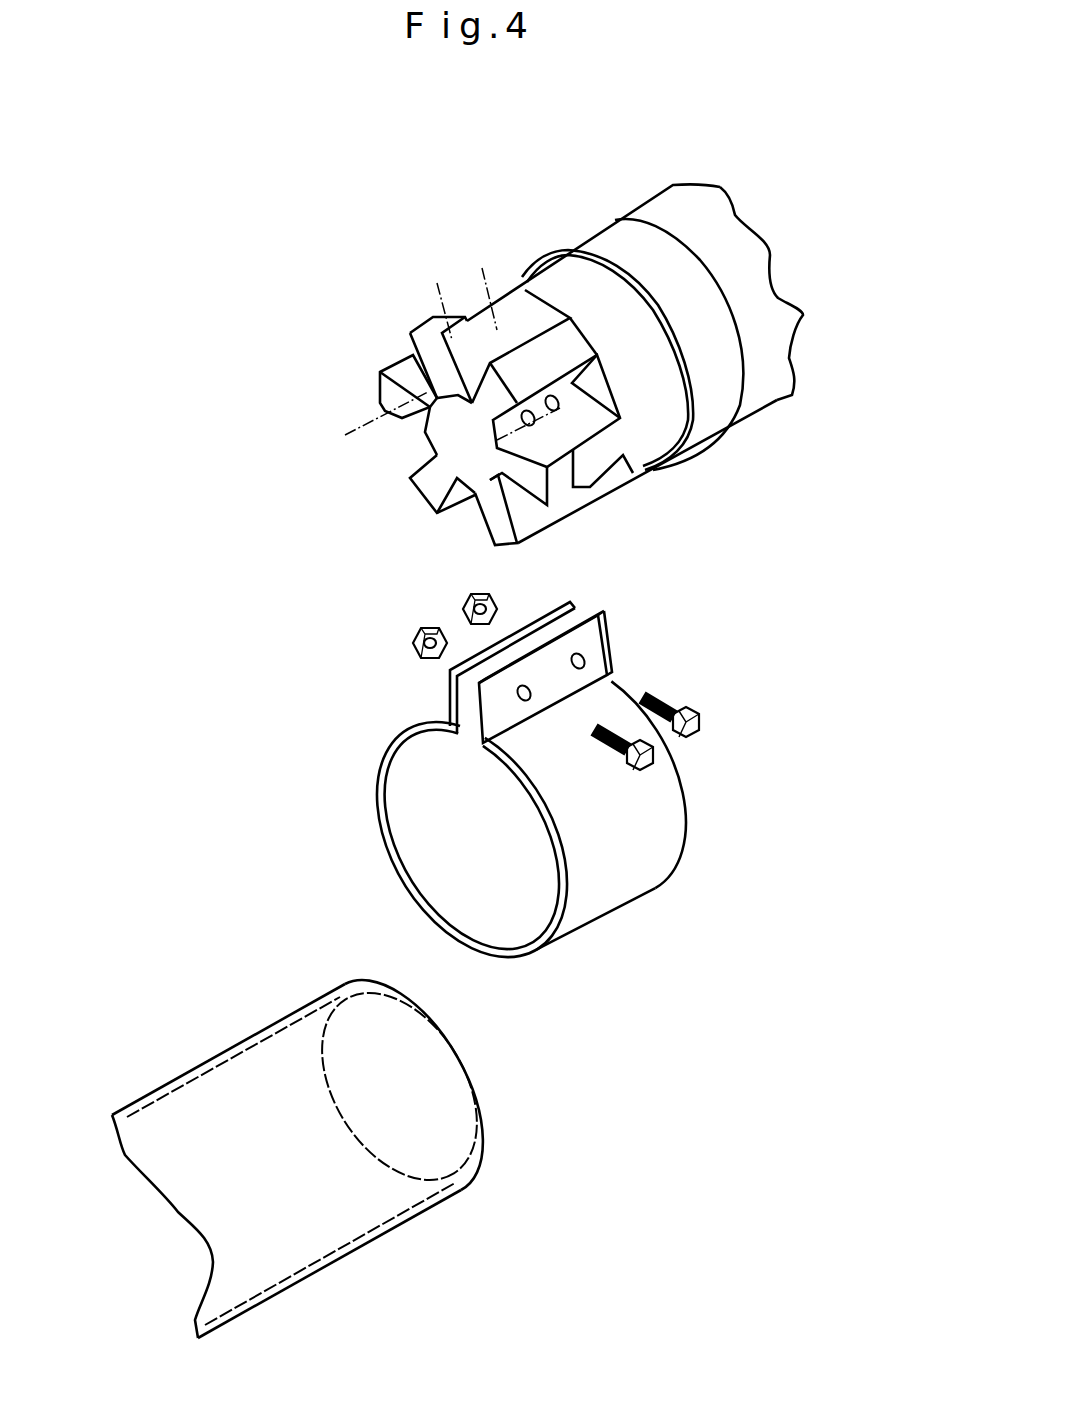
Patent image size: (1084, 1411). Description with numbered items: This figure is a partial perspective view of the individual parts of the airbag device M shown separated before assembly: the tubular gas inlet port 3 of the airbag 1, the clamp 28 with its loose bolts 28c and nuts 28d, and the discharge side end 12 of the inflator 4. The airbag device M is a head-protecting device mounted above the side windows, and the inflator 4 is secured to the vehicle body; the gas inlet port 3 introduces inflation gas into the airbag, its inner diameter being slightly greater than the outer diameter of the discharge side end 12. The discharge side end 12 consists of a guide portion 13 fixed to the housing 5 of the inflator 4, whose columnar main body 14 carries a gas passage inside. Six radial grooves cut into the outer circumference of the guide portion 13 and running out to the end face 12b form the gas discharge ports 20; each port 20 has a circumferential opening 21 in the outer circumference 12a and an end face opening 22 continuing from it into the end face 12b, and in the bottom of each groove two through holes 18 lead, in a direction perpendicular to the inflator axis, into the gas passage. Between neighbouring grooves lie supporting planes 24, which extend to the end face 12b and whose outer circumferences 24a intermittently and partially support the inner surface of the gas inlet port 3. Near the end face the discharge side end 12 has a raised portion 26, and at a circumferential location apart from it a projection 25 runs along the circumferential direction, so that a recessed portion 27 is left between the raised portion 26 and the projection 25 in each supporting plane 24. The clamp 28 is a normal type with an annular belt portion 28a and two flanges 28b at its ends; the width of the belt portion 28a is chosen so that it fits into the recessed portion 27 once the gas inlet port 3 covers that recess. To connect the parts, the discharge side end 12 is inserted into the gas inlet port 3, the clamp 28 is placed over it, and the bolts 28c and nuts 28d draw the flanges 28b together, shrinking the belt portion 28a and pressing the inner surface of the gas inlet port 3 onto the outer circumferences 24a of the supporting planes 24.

The airbag 1 is at (310, 1134).
The gas inlet port 3 is at (262, 1058).
The inflator 4 is at (664, 343).
The housing 5 is at (664, 343).
The discharge side end 12 is at (461, 390).
The outer circumference 12a is at (505, 390).
The end face 12b is at (390, 400).
The guide portion 13 is at (643, 395).
The columnar main body 14 is at (700, 423).
The through holes 18 is at (557, 405).
The gas discharge ports 20 is at (505, 390).
The circumferential opening 21 is at (517, 313).
The end face opening 22 is at (400, 364).
The supporting plane 24 is at (613, 487).
The outer circumferences 24a is at (597, 482).
The projection 25 is at (727, 307).
The raised portion 26 is at (537, 527).
The recessed portion 27 is at (640, 313).
The clamp 28 is at (550, 812).
The belt portion 28a is at (667, 825).
The flanges 28b is at (597, 650).
The bolts 28c is at (655, 768).
The nuts 28d is at (462, 603).
The airbag device M is at (688, 1180).